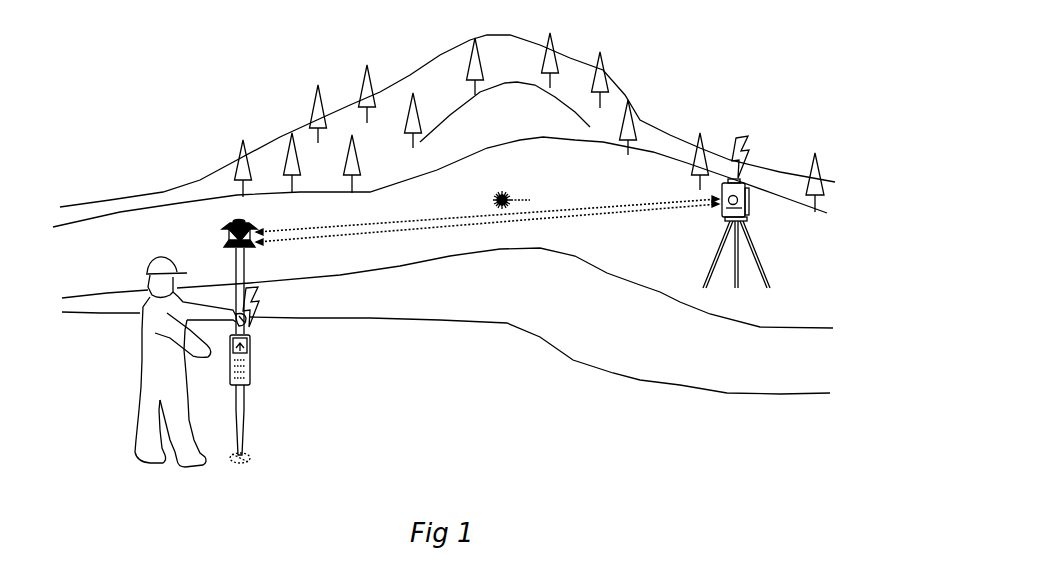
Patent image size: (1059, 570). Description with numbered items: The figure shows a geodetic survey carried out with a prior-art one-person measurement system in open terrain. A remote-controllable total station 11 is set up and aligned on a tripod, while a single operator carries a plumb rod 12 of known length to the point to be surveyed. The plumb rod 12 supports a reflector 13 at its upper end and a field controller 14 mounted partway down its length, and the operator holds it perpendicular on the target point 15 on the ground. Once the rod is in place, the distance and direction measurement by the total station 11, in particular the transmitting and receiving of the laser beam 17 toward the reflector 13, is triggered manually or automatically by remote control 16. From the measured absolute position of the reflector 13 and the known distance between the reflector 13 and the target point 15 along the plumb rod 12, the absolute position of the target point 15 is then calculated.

The total station 11 is at (708, 225).
The plumb rod 12 is at (242, 267).
The reflector 13 is at (263, 227).
The field controller 14 is at (250, 358).
The target point 15 is at (228, 474).
The remote control 16 is at (256, 327).
The laser beam 17 is at (544, 196).